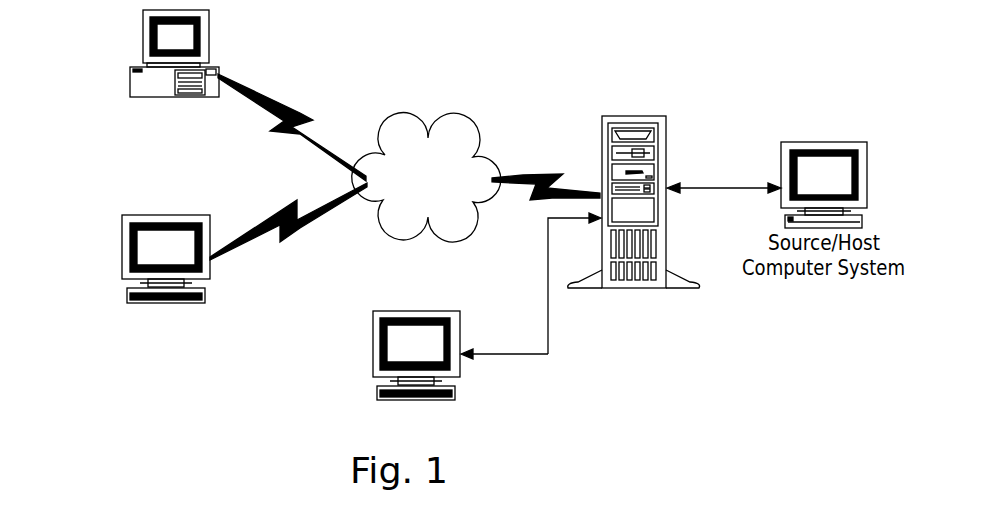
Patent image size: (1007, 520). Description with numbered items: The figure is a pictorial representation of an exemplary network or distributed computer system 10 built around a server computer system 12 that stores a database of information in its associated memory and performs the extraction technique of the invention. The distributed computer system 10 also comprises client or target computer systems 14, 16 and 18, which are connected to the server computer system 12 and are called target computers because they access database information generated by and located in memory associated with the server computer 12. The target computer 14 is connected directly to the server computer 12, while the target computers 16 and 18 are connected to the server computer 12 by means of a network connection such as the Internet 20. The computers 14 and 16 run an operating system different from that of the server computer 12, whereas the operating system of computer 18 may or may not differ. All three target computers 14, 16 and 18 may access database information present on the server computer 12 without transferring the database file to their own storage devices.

The distributed computer system 10 is at (544, 78).
The server computer system 12 is at (875, 338).
The target computer system 14 is at (373, 355).
The target computer system 16 is at (122, 262).
The target computer system 18 is at (130, 77).
The Internet 20 is at (410, 128).